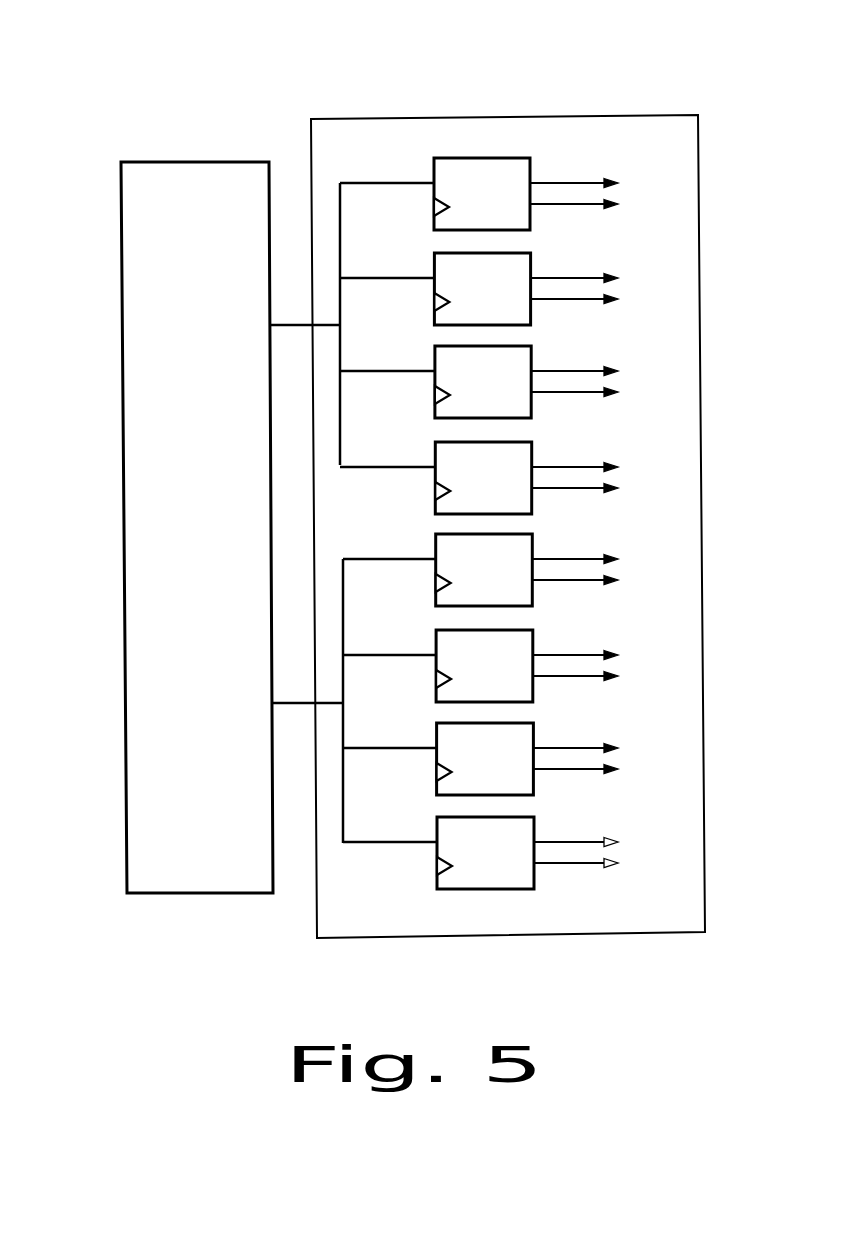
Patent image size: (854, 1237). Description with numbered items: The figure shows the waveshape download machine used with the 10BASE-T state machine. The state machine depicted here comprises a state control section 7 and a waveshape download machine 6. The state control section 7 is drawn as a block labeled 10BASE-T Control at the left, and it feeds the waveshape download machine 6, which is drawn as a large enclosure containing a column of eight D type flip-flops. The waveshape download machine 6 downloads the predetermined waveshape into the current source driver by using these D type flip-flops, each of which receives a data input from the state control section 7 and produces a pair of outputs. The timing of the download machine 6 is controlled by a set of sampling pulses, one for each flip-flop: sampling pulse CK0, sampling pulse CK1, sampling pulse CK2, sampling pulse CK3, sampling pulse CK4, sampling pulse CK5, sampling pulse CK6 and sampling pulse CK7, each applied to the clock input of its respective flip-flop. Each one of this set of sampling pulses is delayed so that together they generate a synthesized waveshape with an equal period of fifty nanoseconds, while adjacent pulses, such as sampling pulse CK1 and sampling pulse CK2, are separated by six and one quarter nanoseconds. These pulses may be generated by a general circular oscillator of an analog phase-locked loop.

The waveshape download machine 6 is at (517, 473).
The state control section 7 is at (152, 385).
The sampling pulse CK0 is at (434, 207).
The sampling pulse CK1 is at (434, 302).
The sampling pulse CK2 is at (435, 395).
The sampling pulse CK3 is at (435, 491).
The sampling pulse CK4 is at (436, 583).
The sampling pulse CK5 is at (436, 679).
The sampling pulse CK6 is at (437, 772).
The sampling pulse CK7 is at (437, 866).